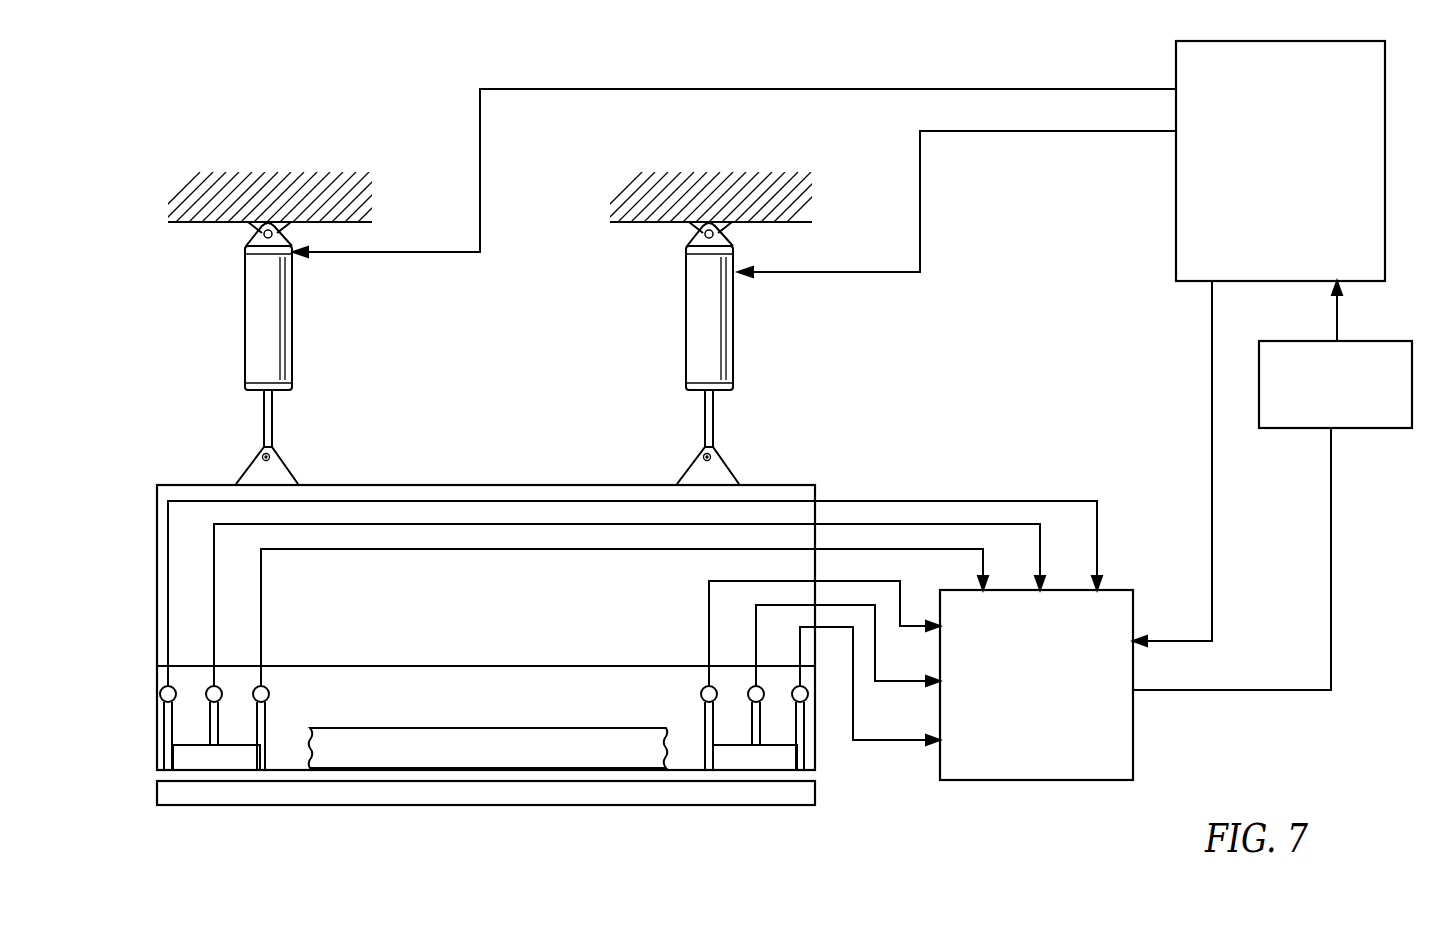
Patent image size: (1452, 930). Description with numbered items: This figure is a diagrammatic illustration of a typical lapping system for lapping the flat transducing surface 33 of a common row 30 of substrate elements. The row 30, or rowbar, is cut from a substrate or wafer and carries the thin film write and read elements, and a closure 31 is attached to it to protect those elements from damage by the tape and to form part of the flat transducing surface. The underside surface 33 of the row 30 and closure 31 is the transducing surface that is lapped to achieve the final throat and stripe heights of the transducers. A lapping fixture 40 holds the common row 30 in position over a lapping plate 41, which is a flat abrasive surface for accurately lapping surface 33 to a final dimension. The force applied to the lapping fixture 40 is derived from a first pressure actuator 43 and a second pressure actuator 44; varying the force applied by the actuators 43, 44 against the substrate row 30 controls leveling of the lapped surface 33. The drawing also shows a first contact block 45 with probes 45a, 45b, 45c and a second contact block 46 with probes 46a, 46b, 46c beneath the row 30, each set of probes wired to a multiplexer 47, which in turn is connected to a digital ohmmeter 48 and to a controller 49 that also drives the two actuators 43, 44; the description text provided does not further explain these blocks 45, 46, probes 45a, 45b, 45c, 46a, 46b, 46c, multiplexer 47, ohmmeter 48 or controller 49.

The row 30 is at (520, 710).
The closure 31 is at (358, 727).
The underside surface 33 is at (400, 772).
The lapping fixture 40 is at (486, 484).
The lapping plate 41 is at (541, 797).
The first pressure actuator 43 is at (294, 350).
The second pressure actuator 44 is at (735, 350).
The first contact block 45 is at (197, 764).
The first probe 45a is at (625, 634).
The second probe 45b is at (631, 635).
The third probe 45c is at (620, 659).
The second contact block 46 is at (750, 764).
The fourth probe 46a is at (844, 675).
The fifth probe 46b is at (866, 701).
The sixth probe 46c is at (820, 675).
The multiplexer 47 is at (1110, 783).
The digital ohmmeter 48 is at (1390, 433).
The controller 49 is at (1388, 238).